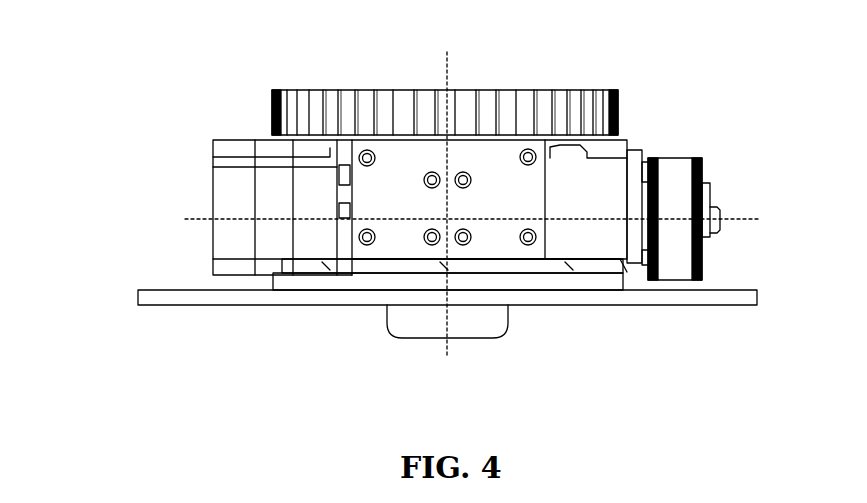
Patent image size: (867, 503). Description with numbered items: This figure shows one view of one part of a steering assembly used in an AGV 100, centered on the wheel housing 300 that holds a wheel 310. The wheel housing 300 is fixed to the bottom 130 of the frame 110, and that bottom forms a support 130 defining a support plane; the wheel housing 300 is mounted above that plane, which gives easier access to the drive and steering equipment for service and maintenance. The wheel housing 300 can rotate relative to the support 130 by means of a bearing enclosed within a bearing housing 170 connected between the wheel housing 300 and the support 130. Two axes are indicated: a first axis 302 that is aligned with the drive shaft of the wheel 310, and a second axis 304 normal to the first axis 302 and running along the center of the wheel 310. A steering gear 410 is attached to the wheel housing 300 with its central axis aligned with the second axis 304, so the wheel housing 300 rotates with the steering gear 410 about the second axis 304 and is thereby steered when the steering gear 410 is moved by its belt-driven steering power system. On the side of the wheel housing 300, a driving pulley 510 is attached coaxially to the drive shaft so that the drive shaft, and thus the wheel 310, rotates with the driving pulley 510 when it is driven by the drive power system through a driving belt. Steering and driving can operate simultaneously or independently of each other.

The AGV 100 is at (170, 100).
The frame 110 is at (737, 287).
The support 130 is at (158, 297).
The bearing housing 170 is at (303, 302).
The wheel housing 300 is at (493, 240).
The first axis 302 is at (732, 218).
The second axis 304 is at (447, 68).
The wheel 310 is at (403, 328).
The steering gear 410 is at (615, 90).
The driving pulley 510 is at (672, 168).